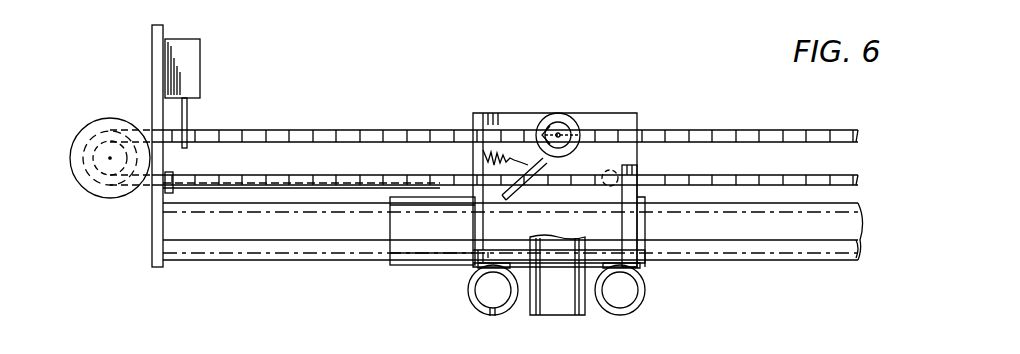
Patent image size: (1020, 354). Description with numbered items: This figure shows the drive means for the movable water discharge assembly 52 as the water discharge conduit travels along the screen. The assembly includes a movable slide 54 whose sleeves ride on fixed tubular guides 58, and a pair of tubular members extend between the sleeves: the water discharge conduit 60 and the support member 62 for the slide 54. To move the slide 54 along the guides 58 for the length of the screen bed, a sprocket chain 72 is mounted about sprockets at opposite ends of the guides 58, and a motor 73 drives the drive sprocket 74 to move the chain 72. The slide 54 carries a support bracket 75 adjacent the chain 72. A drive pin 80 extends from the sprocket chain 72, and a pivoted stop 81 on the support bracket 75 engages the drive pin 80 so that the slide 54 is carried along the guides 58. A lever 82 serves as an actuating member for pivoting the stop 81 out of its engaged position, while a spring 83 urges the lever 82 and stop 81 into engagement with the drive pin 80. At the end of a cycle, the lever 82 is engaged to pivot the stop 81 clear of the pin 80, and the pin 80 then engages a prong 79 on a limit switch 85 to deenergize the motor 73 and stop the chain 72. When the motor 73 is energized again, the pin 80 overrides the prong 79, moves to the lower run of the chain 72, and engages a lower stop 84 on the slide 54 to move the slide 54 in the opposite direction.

The water discharge assembly 52 is at (438, 277).
The slide 54 is at (407, 247).
The tubular guides 58 is at (762, 240).
The water discharge conduit 60 is at (480, 313).
The support member 62 is at (637, 308).
The sprocket chain 72 is at (302, 130).
The motor 73 is at (95, 200).
The drive sprocket 74 is at (110, 145).
The support bracket 75 is at (620, 122).
The prong 79 is at (187, 115).
The drive pin 80 is at (573, 132).
The pivoted stop 81 is at (553, 128).
The lever 82 is at (515, 185).
The spring 83 is at (496, 140).
The lower stop 84 is at (627, 203).
The limit switch 85 is at (192, 58).